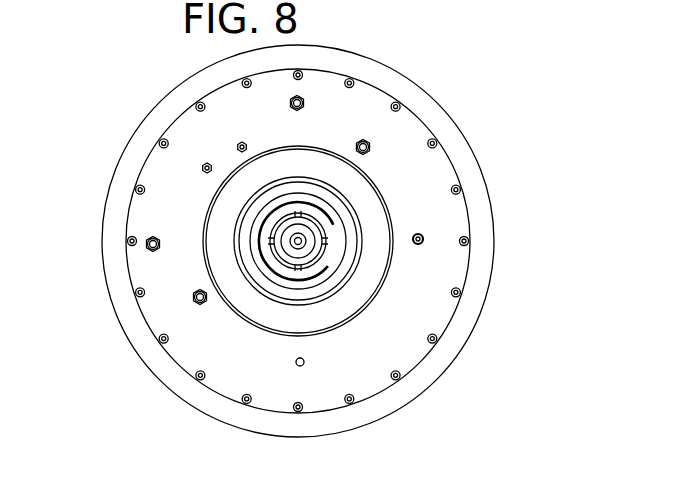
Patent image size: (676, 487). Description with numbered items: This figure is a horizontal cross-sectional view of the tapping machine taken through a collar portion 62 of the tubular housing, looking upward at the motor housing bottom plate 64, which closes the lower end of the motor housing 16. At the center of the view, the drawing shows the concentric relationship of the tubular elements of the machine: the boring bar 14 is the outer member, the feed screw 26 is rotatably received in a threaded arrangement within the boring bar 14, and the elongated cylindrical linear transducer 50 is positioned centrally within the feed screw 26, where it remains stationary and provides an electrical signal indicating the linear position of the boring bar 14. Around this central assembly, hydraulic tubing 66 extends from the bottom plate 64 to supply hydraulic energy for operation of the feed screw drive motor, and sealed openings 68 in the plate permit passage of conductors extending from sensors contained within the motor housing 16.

The boring bar 14 is at (342, 233).
The motor housing 16 is at (418, 118).
The feed screw 26 is at (325, 255).
The linear transducer 50 is at (303, 247).
The collar portion 62 is at (352, 195).
The motor housing bottom plate 64 is at (162, 210).
The hydraulic tubing 66 is at (305, 97).
The sealed openings 68 is at (242, 142).